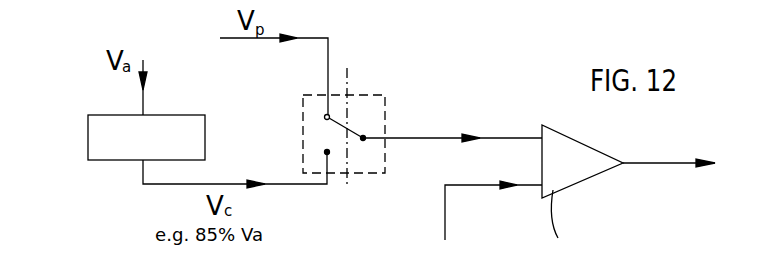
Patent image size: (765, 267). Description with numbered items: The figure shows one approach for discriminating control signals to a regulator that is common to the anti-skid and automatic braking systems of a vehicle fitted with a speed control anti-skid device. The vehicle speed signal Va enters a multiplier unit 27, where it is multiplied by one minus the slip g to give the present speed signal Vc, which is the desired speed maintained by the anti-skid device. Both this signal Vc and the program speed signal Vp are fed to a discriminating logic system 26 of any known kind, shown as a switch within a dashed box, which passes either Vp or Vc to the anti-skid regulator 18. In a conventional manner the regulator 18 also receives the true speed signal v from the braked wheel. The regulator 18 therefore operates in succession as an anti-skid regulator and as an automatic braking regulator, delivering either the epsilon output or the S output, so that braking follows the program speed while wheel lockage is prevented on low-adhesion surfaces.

The multiplier unit 27 is at (88, 138).
The discriminating logic system 26 is at (372, 122).
The anti-skid regulator 18 is at (562, 167).